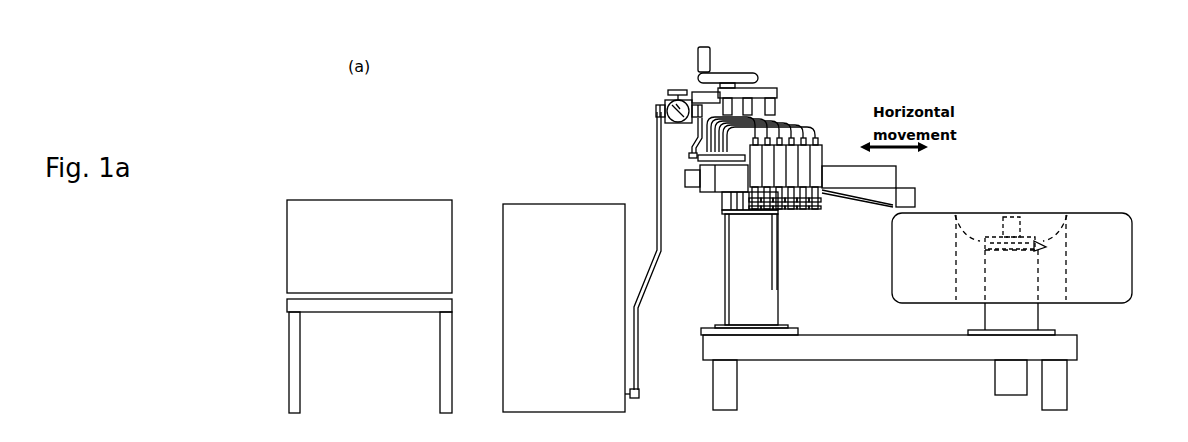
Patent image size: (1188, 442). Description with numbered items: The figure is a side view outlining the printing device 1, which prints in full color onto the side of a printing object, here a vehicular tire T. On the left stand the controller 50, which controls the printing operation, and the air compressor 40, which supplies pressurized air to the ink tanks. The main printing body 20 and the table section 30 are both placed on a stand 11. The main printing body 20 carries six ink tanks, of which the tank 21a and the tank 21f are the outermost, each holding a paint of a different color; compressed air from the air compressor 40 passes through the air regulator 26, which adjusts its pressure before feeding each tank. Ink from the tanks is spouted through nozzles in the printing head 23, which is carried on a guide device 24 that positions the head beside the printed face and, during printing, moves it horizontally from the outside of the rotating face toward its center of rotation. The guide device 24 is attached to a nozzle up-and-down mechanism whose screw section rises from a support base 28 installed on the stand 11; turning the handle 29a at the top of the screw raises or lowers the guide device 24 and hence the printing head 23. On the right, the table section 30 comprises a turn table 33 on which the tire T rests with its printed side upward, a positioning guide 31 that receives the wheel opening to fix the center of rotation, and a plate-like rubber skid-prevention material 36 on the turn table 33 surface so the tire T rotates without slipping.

The printing device 1 is at (784, 52).
The stand 11 is at (820, 335).
The main printing body 20 is at (794, 106).
The ink tank 21a is at (817, 158).
The ink tank 21f is at (748, 172).
The printing head 23 is at (915, 196).
The guide device 24 is at (842, 168).
The air regulator 26 is at (672, 90).
The support base 28 is at (735, 278).
The handle 29a is at (718, 39).
The table section 30 is at (1038, 315).
The positioning guide 31 is at (1005, 217).
The turn table 33 is at (1040, 245).
The skid-prevention material 36 is at (1018, 243).
The air compressor 40 is at (505, 204).
The controller 50 is at (310, 200).
The vehicular tire T is at (1132, 258).